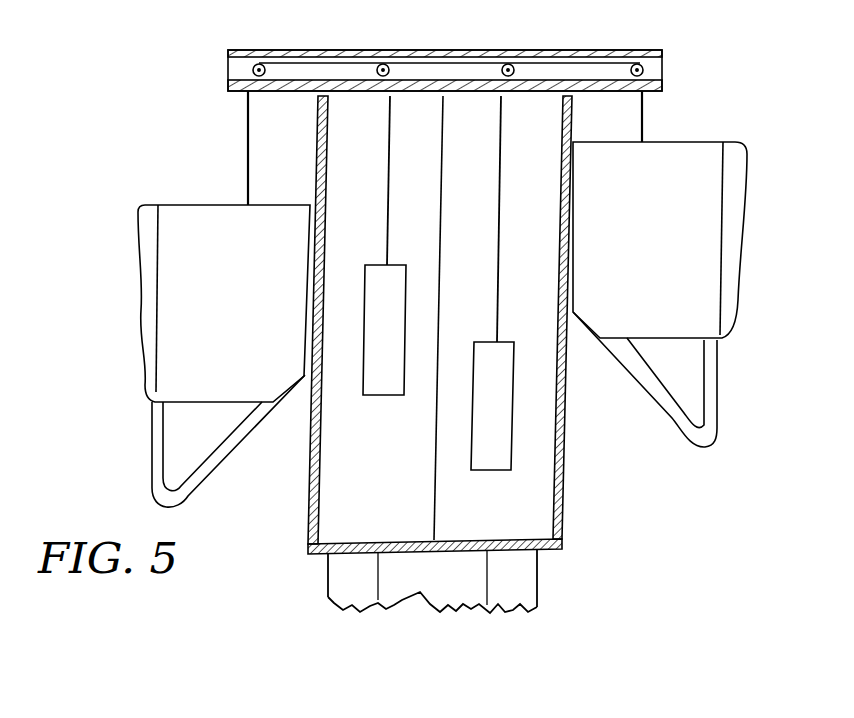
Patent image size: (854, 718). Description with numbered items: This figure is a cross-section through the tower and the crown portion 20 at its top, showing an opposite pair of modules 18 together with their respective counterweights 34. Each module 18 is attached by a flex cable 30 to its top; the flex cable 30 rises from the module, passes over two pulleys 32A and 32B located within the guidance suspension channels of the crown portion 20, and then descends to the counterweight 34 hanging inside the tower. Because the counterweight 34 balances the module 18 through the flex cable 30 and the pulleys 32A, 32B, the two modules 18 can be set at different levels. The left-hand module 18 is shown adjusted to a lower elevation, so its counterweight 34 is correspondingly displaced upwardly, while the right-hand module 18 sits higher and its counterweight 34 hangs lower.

The module 18 is at (242, 312).
The crown portion 20 is at (656, 73).
The flex cable 30 is at (248, 157).
The pulley 32A is at (259, 64).
The pulley 32B is at (388, 64).
The counterweight 34 is at (385, 350).